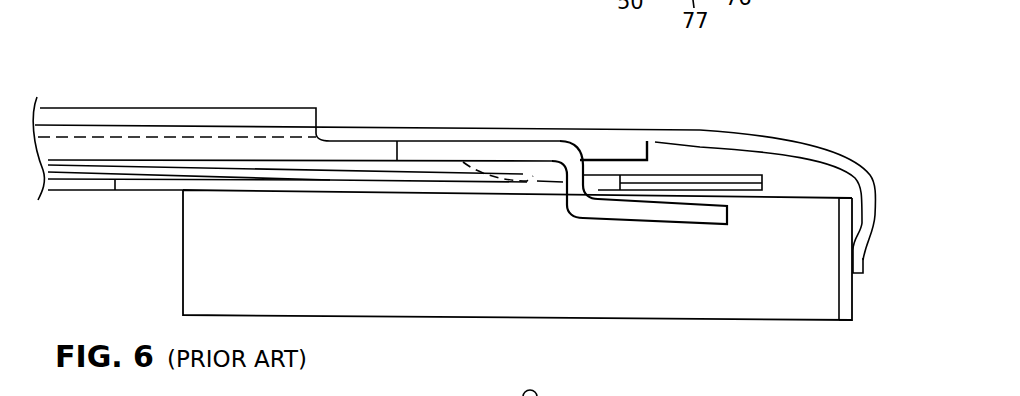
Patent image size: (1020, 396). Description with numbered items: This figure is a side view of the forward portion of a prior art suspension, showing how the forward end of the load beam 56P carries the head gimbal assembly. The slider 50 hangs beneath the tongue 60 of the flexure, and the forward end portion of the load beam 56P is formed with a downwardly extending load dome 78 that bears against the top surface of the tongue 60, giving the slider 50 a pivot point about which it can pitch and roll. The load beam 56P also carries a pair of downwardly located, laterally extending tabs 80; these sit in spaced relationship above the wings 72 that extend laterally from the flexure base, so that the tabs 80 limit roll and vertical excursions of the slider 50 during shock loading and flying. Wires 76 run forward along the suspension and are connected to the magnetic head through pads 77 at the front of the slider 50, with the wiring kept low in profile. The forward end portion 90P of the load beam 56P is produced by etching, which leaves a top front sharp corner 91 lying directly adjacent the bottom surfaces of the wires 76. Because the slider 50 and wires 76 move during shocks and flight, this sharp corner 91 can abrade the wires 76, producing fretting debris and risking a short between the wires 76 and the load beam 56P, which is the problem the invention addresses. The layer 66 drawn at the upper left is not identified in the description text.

The load beam 56P is at (257, 84).
The flexure layer 66 is at (131, 181).
The tongue 60 is at (253, 187).
The slider 50 is at (407, 273).
The forward end portion of the load beam 90P is at (595, 148).
The top front sharp corner 91 is at (648, 142).
The wires 76 is at (822, 152).
The pads 77 is at (863, 260).
The wings 72 is at (740, 176).
The load dome 78 is at (532, 183).
The tabs 80 is at (647, 223).